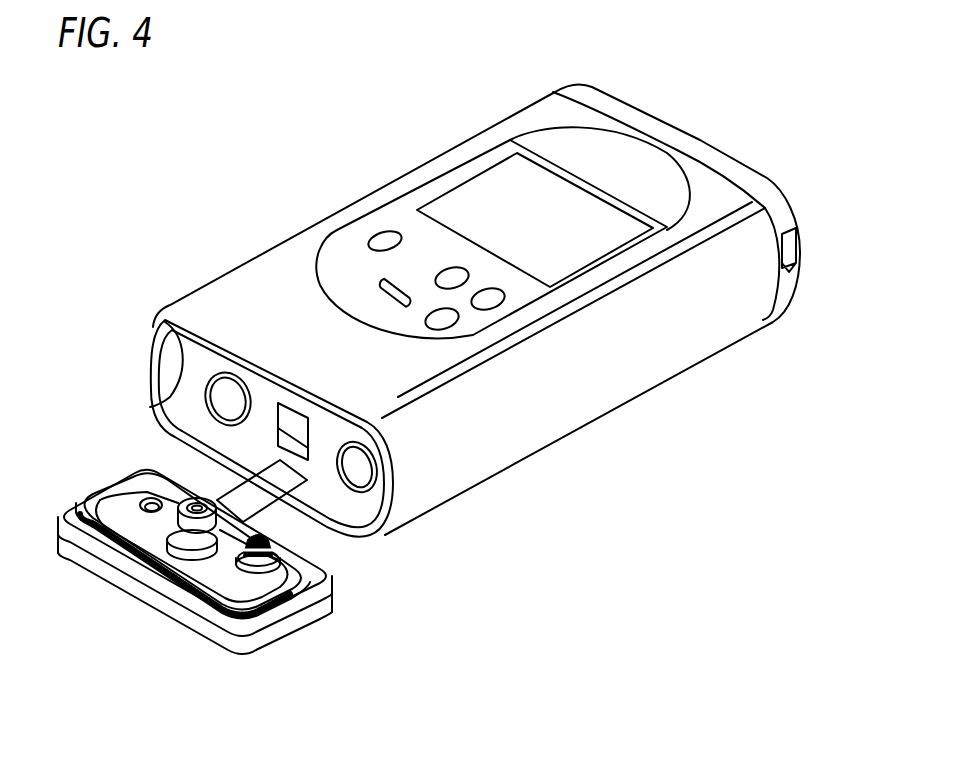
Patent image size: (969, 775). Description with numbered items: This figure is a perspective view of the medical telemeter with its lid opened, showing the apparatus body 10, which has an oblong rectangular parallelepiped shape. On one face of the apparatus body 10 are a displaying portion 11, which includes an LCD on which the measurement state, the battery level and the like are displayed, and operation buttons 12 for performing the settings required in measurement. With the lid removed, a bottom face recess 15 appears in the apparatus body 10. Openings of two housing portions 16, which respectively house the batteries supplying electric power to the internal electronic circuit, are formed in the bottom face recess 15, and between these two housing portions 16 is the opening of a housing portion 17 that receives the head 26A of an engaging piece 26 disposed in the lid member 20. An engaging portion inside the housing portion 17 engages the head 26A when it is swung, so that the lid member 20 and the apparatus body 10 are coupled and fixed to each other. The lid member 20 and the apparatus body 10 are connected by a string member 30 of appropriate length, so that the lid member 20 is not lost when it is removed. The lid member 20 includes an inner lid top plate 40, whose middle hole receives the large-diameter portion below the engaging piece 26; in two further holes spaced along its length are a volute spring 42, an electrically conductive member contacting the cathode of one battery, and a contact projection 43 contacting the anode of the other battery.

The apparatus body 10 is at (285, 260).
The displaying portion 11 is at (500, 185).
The operation buttons 12 is at (385, 232).
The bottom face recess 15 is at (206, 358).
The housing portions 16 is at (210, 392).
The housing portion 17 is at (277, 437).
The lid member 20 is at (207, 633).
The engaging piece 26 is at (163, 524).
The head 26A is at (110, 470).
The string member 30 is at (255, 500).
The inner lid top plate 40 is at (208, 562).
The volute spring 42 is at (283, 568).
The contact projection 43 is at (140, 500).